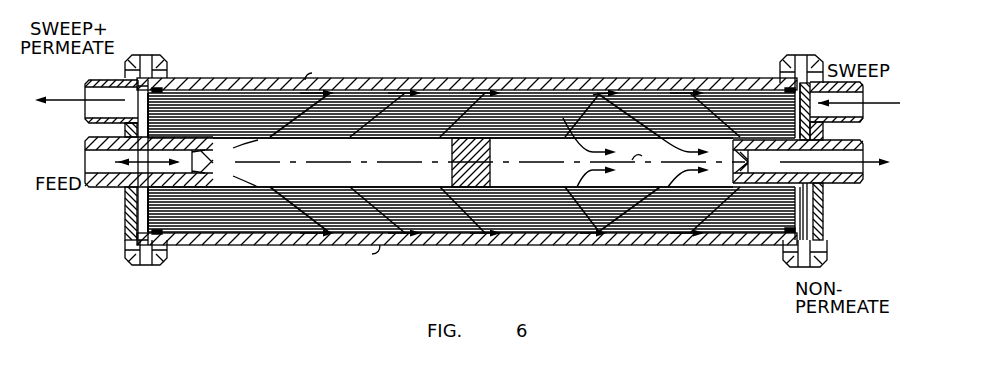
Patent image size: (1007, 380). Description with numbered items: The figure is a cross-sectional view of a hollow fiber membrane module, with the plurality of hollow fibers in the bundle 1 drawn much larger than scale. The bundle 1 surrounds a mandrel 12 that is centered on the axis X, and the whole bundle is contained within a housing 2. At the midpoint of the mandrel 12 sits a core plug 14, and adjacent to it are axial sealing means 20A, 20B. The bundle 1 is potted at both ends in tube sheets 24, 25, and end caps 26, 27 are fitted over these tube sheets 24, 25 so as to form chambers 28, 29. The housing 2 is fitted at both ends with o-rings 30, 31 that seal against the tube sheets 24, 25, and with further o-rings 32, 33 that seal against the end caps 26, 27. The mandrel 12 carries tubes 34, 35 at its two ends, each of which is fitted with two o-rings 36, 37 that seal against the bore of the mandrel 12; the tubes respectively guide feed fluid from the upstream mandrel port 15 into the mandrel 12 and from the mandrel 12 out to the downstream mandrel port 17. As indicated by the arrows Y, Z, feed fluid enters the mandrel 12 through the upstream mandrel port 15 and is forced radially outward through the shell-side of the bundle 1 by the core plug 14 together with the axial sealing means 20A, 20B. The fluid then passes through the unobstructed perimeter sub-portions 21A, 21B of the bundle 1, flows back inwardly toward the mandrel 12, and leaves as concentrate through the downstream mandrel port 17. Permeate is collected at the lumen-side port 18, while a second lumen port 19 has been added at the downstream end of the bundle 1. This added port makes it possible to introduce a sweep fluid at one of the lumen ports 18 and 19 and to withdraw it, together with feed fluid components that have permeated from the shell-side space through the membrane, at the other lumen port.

The bundle 1 is at (210, 80).
The housing 2 is at (228, 79).
The mandrel 12 is at (345, 140).
The core plug 14 is at (490, 150).
The upstream mandrel port 15 is at (97, 191).
The downstream mandrel port 17 is at (855, 161).
The lumen-side port 18 is at (86, 91).
The second lumen port 19 is at (863, 98).
The axial sealing means 20A is at (448, 139).
The axial sealing means 20B is at (510, 186).
The unobstructed perimeter sub-portion 21A is at (467, 80).
The unobstructed perimeter sub-portion 21B is at (470, 246).
The tube sheet 24 is at (170, 100).
The tube sheet 25 is at (780, 243).
The end cap 26 is at (127, 242).
The end cap 27 is at (818, 244).
The chamber 28 is at (148, 214).
The chamber 29 is at (806, 224).
The o-ring 30 is at (162, 88).
The o-ring 31 is at (790, 90).
The o-ring 32 is at (145, 55).
The o-ring 33 is at (815, 63).
The tube 34 is at (85, 141).
The tube 35 is at (838, 184).
The o-ring 36 is at (192, 161).
The o-ring 37 is at (755, 162).
The axis X is at (645, 151).
The arrow Y is at (314, 67).
The arrow Z is at (369, 258).